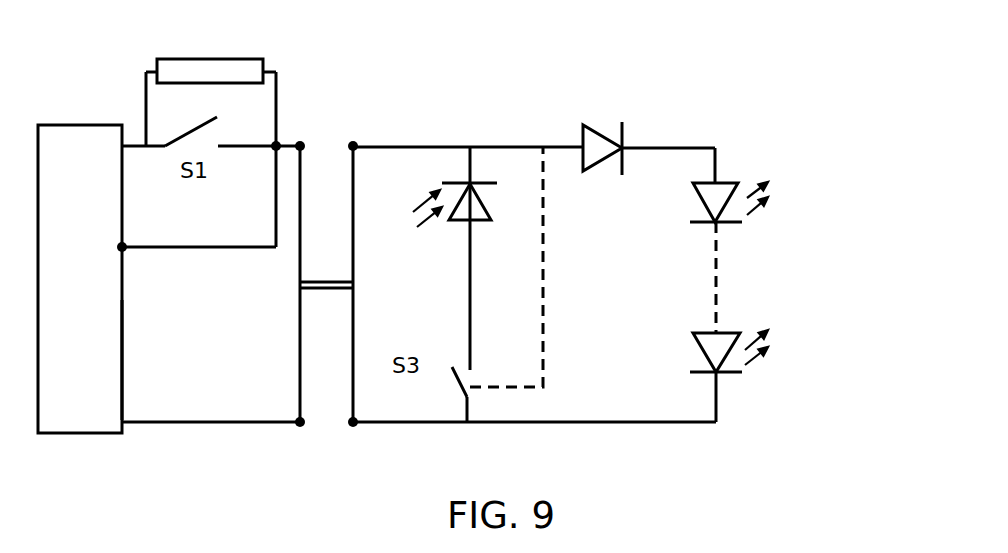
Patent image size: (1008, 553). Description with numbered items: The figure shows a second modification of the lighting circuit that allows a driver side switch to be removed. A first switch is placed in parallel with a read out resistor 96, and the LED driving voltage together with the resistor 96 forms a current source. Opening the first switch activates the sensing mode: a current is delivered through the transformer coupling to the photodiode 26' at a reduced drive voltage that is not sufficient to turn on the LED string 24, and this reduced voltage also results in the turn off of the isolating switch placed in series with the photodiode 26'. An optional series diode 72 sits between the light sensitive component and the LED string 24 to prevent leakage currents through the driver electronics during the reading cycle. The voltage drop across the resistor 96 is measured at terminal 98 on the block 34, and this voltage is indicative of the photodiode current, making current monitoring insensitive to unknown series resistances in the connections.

The terminal 98 is at (119, 250).
The housing 34 is at (127, 354).
The read out resistor 96 is at (208, 59).
The photodiode 26' is at (436, 258).
The series diode 72 is at (603, 133).
The LED string 24 is at (755, 143).